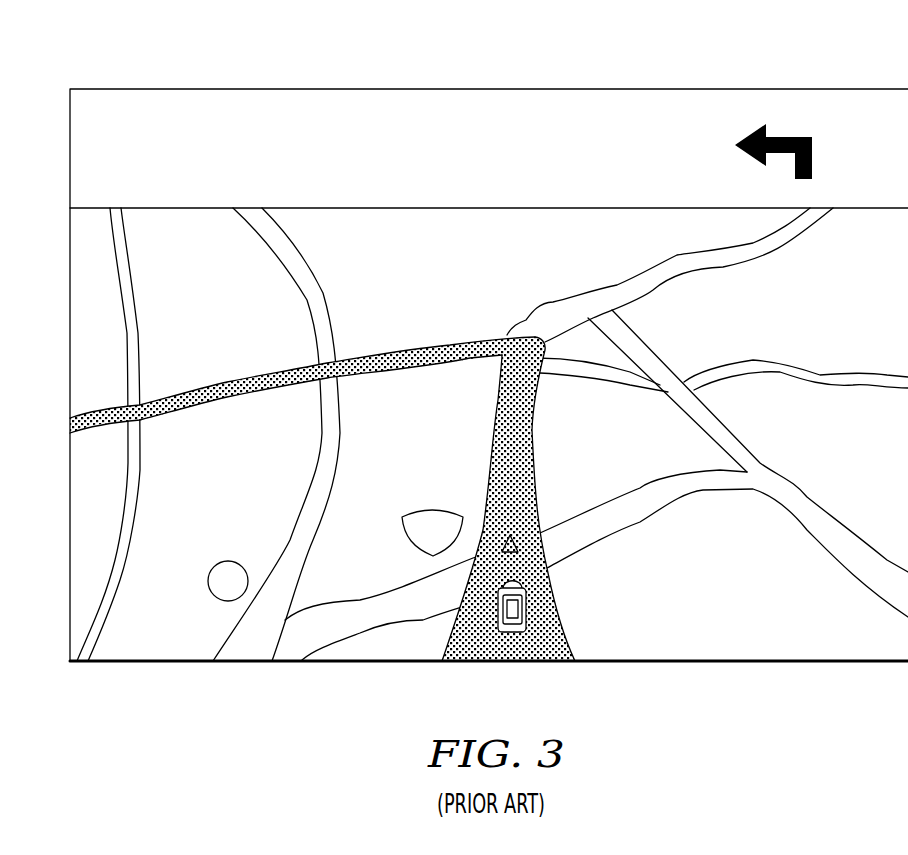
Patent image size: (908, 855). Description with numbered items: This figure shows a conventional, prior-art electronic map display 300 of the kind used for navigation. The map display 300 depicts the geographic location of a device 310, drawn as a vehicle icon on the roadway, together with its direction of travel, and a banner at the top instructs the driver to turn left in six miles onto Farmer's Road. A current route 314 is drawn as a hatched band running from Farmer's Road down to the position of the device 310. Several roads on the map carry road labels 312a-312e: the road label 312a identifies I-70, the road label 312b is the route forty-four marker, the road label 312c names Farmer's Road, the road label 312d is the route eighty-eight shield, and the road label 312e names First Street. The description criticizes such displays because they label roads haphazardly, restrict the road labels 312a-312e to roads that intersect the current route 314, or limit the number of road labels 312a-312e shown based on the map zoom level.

The electronic map display 300 is at (833, 88).
The device 310 is at (522, 604).
The road label 312a is at (588, 472).
The road label 312b is at (227, 560).
The road label 312c is at (401, 311).
The road label 312d is at (413, 511).
The road label 312e is at (108, 434).
The current route 314 is at (495, 403).